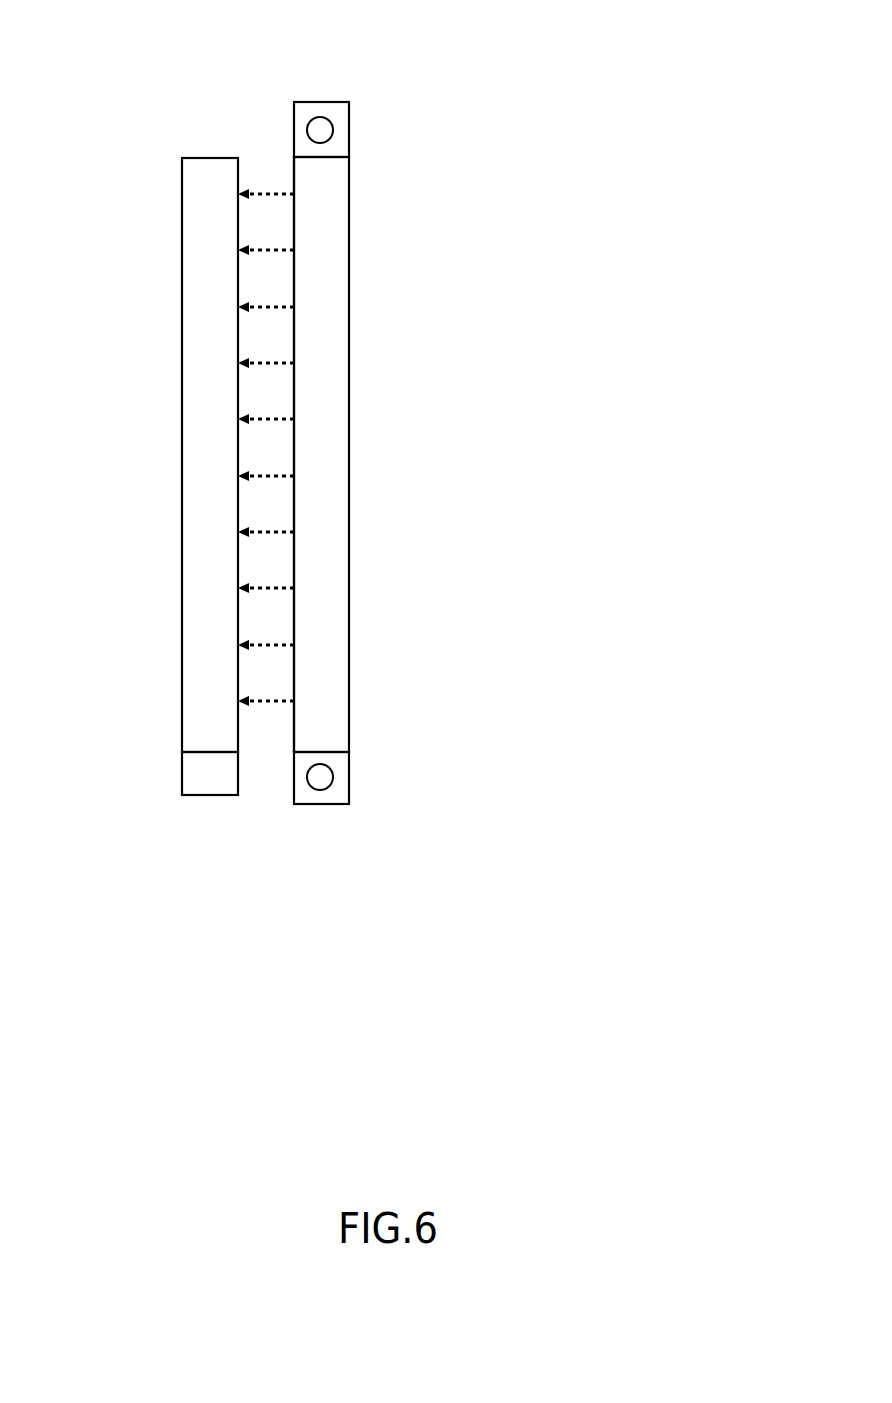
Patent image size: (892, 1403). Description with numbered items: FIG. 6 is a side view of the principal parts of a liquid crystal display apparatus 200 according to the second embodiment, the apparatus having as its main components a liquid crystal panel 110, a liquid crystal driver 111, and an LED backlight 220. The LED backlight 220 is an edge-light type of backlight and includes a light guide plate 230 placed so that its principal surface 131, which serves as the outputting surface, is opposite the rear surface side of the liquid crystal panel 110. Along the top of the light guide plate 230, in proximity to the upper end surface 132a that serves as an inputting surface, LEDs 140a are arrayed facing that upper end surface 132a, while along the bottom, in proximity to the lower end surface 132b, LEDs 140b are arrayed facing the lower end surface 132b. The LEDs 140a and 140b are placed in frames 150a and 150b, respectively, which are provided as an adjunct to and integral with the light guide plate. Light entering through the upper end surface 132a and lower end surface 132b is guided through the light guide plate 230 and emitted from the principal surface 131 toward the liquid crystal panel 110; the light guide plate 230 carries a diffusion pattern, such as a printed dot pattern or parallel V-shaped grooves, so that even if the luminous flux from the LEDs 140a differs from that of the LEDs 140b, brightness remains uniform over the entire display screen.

The liquid crystal display apparatus 200 is at (618, 122).
The liquid crystal panel 110 is at (188, 675).
The liquid crystal driver 111 is at (203, 797).
The LED backlight 220 is at (350, 483).
The light guide plate 230 is at (338, 378).
The principal surface 131 is at (294, 173).
The upper end surface 132a is at (338, 158).
The lower end surface 132b is at (307, 750).
The LEDs 140a is at (334, 127).
The LEDs 140b is at (333, 773).
The frame 150a is at (313, 102).
The frame 150b is at (332, 805).